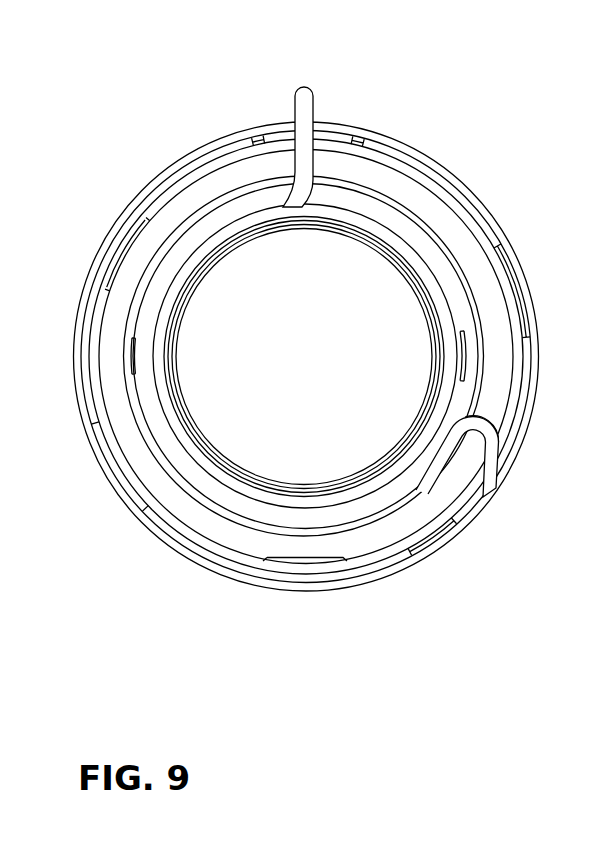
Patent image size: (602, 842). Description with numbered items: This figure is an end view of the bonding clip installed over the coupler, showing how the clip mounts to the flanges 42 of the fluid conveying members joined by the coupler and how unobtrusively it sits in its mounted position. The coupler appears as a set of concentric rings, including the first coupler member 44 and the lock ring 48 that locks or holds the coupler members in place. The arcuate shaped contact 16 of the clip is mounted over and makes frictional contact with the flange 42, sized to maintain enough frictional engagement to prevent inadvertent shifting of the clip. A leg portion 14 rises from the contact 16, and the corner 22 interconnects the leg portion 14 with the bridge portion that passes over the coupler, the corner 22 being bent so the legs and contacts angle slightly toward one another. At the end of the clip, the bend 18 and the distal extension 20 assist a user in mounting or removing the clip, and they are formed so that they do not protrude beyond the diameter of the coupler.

The leg portion 14 is at (302, 150).
The arcuate shaped contact 16 is at (155, 300).
The bend 18 is at (496, 430).
The distal extension 20 is at (494, 494).
The corner 22 is at (308, 86).
The flange 42 is at (425, 270).
The first coupler member 44 is at (417, 196).
The lock ring 48 is at (403, 150).